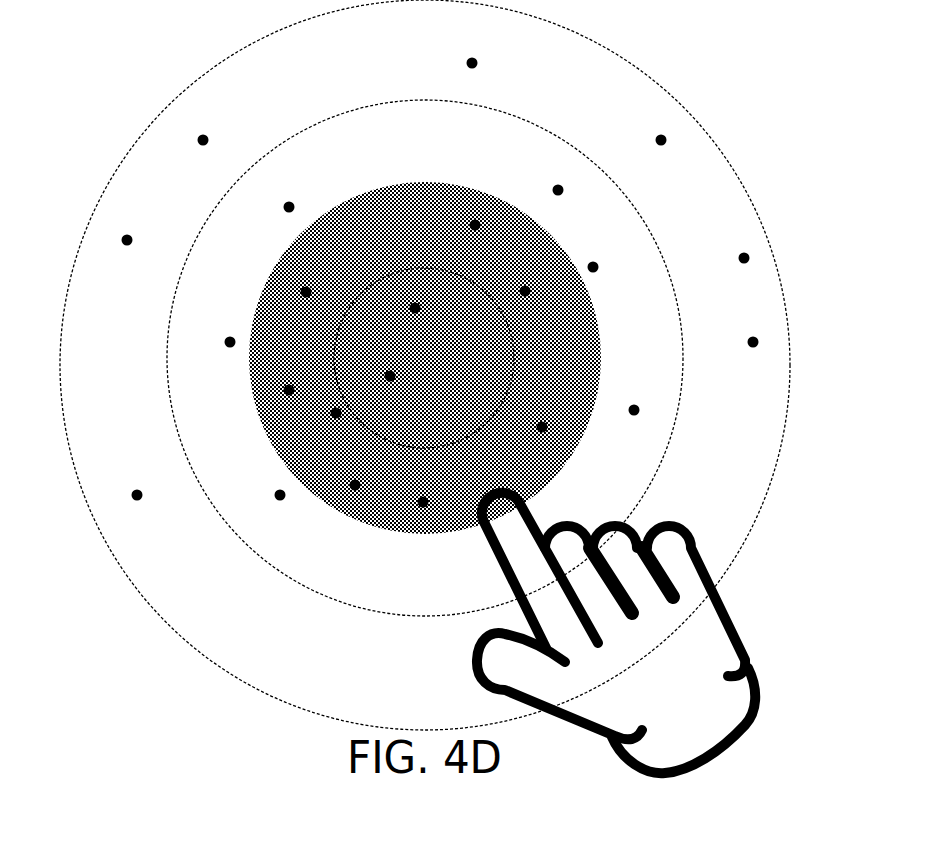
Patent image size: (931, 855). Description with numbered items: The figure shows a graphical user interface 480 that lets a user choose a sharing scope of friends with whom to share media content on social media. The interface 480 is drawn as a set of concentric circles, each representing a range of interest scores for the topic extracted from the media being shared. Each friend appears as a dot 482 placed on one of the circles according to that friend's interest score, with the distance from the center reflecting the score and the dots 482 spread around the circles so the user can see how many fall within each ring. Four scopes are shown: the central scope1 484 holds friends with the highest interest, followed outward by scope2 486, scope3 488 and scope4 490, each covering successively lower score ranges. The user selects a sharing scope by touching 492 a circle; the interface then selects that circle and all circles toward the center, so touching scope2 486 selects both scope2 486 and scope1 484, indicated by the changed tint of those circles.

The graphical user interface 480 is at (614, 62).
The dot 482 is at (664, 140).
The scope1 484 is at (457, 400).
The scope2 486 is at (512, 265).
The scope3 488 is at (478, 174).
The scope4 490 is at (301, 112).
The touching 492 is at (744, 618).